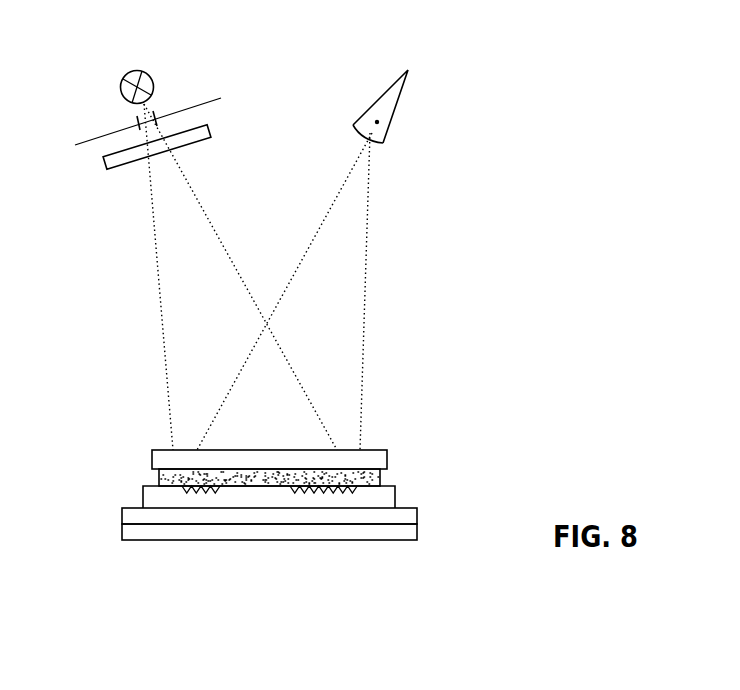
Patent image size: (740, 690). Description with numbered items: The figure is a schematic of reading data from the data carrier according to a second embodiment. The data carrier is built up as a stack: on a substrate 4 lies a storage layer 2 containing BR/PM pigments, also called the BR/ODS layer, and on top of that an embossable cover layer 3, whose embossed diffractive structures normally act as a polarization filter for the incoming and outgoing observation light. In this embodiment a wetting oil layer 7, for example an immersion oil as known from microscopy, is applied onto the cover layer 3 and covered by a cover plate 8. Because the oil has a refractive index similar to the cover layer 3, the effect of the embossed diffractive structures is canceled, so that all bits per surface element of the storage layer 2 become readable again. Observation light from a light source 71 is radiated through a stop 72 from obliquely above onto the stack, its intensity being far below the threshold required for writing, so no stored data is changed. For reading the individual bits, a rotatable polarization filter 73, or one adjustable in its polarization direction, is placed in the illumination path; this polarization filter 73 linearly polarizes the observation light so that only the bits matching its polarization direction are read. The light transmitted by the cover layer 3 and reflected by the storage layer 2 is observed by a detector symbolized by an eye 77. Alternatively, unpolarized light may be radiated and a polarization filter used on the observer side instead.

The light source 71 is at (121, 84).
The stop 72 is at (134, 122).
The polarization filter 73 is at (105, 163).
The eye 77 is at (395, 102).
The cover plate 8 is at (368, 462).
The wetting oil layer 7 is at (372, 480).
The cover layer 3 is at (390, 497).
The storage layer 2 is at (405, 518).
The substrate 4 is at (410, 532).